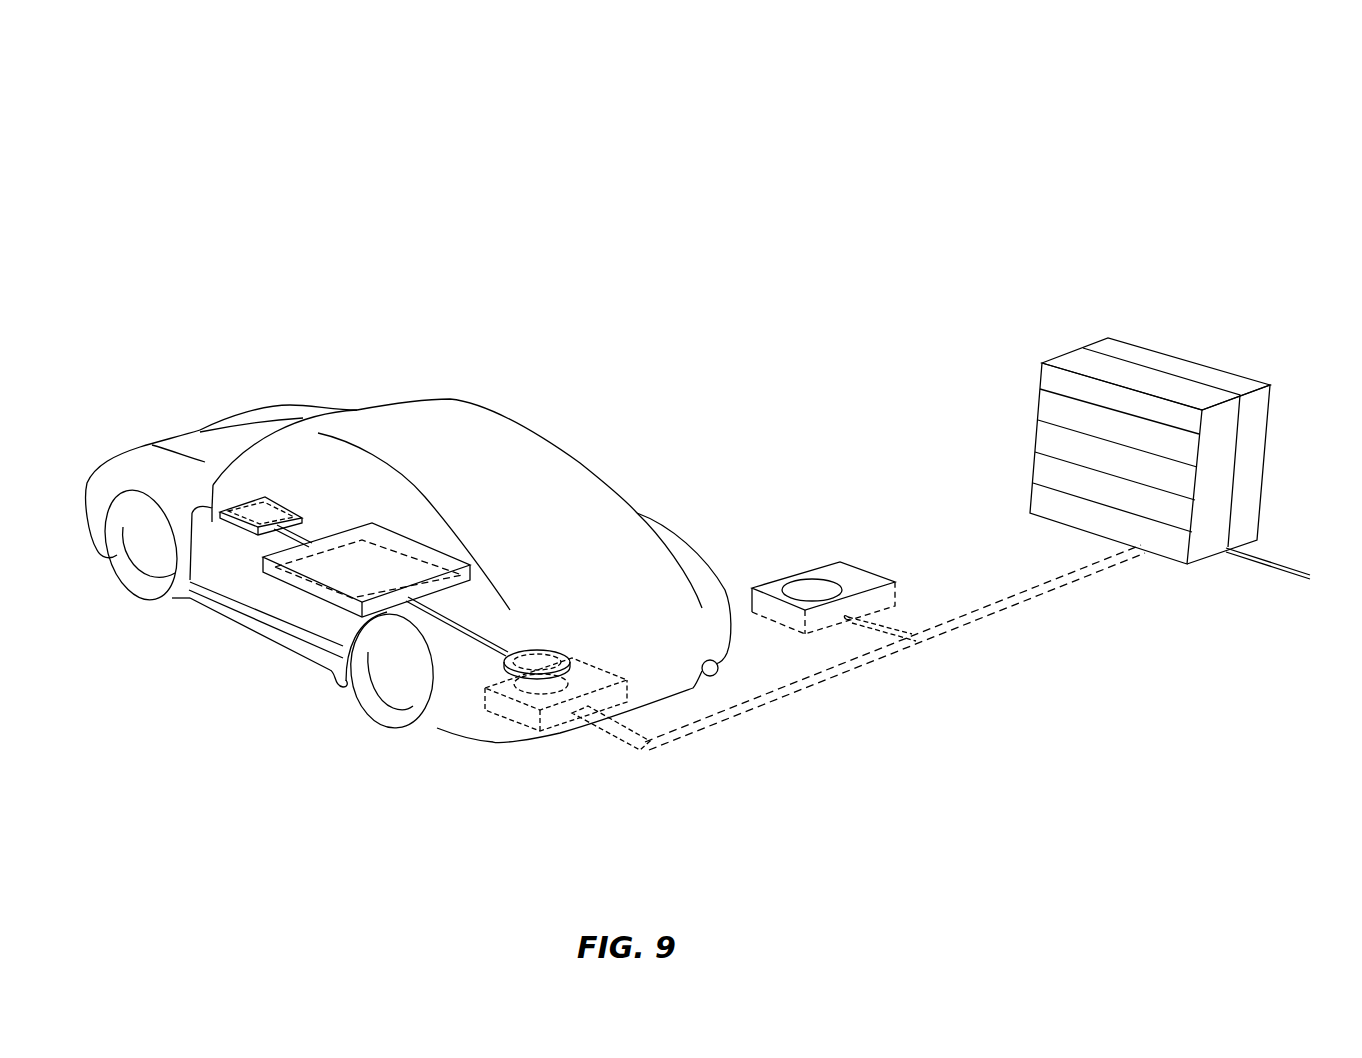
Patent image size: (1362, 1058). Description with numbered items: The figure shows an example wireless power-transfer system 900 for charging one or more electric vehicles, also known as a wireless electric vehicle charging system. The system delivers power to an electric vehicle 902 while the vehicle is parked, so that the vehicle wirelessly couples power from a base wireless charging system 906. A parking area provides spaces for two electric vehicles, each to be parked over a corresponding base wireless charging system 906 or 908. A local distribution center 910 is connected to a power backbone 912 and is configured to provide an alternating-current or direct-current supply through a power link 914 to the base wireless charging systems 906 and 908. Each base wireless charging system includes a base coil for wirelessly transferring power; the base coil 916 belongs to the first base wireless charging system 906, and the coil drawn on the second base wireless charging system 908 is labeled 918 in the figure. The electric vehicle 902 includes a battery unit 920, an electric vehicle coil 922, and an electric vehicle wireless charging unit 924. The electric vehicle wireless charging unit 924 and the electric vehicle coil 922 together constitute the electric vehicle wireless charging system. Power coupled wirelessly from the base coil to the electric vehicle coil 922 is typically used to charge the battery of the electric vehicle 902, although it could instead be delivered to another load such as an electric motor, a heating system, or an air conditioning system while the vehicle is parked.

The wireless power-transfer system 900 is at (1262, 88).
The electric vehicle 902 is at (198, 430).
The base wireless charging system 906 is at (507, 688).
The base wireless charging system 908 is at (797, 575).
The local distribution center 910 is at (1077, 357).
The power backbone 912 is at (1280, 573).
The power link 914 is at (1013, 585).
The base coil 916 is at (570, 677).
The transmitter coil 918 is at (820, 580).
The battery unit 920 is at (283, 502).
The electric vehicle coil 922 is at (528, 650).
The electric vehicle wireless charging unit 924 is at (295, 590).